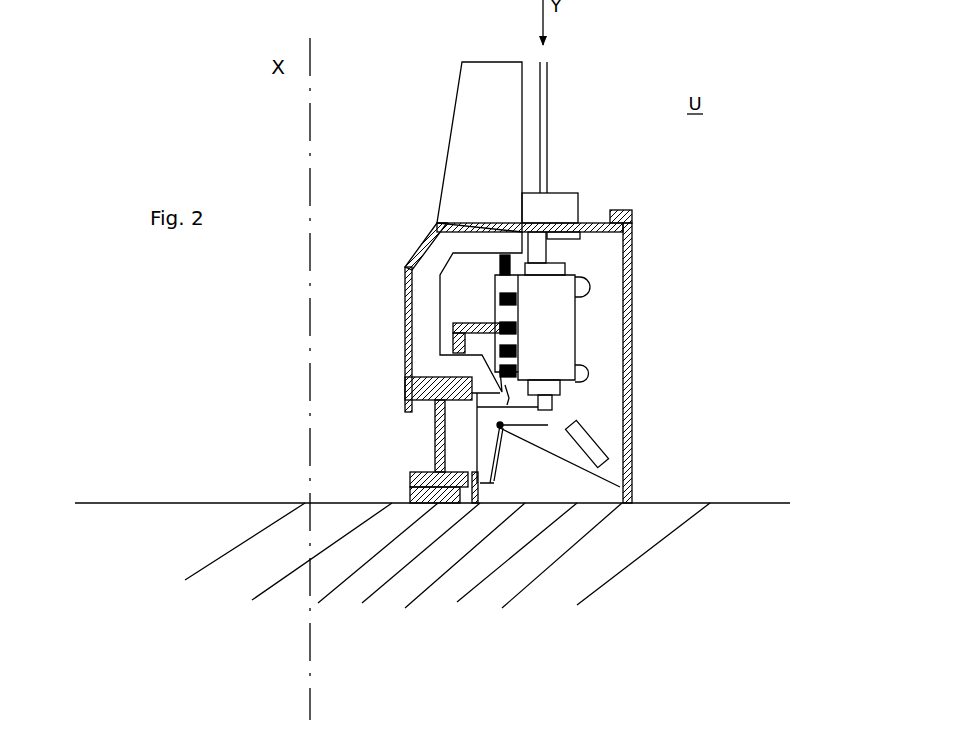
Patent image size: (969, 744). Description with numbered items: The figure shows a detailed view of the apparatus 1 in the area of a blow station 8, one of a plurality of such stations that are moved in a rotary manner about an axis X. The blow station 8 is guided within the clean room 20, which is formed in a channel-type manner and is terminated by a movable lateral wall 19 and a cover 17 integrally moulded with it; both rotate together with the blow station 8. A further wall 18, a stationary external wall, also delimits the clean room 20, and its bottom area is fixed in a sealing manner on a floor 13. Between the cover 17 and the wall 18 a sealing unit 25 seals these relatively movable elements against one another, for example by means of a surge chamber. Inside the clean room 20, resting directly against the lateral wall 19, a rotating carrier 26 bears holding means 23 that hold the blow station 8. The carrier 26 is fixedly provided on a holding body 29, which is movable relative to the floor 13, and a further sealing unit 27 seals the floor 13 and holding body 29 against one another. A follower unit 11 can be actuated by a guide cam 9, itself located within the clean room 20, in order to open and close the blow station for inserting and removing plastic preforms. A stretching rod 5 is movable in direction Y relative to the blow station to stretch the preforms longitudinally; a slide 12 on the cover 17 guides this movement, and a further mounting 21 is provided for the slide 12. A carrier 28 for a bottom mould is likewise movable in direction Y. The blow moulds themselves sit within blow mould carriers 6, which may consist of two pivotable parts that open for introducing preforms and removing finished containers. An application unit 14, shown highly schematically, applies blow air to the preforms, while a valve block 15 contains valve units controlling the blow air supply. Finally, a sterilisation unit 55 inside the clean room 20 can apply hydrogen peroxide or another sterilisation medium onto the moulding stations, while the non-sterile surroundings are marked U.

The apparatus 1 is at (406, 121).
The stretching rod 5 is at (543, 142).
The blow mould carrier 6 is at (565, 348).
The blow station 8 is at (563, 310).
The guide cam 9 is at (490, 480).
The follower unit 11 is at (622, 486).
The slide 12 is at (576, 196).
The floor 13 is at (673, 548).
The application unit 14 is at (547, 268).
The valve block 15 is at (580, 237).
The cover 17 is at (487, 222).
The wall 18 is at (633, 285).
The lateral wall 19 is at (405, 316).
The clean room 20 is at (593, 431).
The mounting 21 is at (505, 107).
The holding means 23 is at (477, 323).
The sealing unit 25 is at (632, 215).
The carrier 26 is at (428, 371).
The further sealing unit 27 is at (412, 497).
The carrier for bottom mould 28 is at (550, 418).
The holding body 29 is at (435, 452).
The sterilisation unit 55 is at (497, 428).